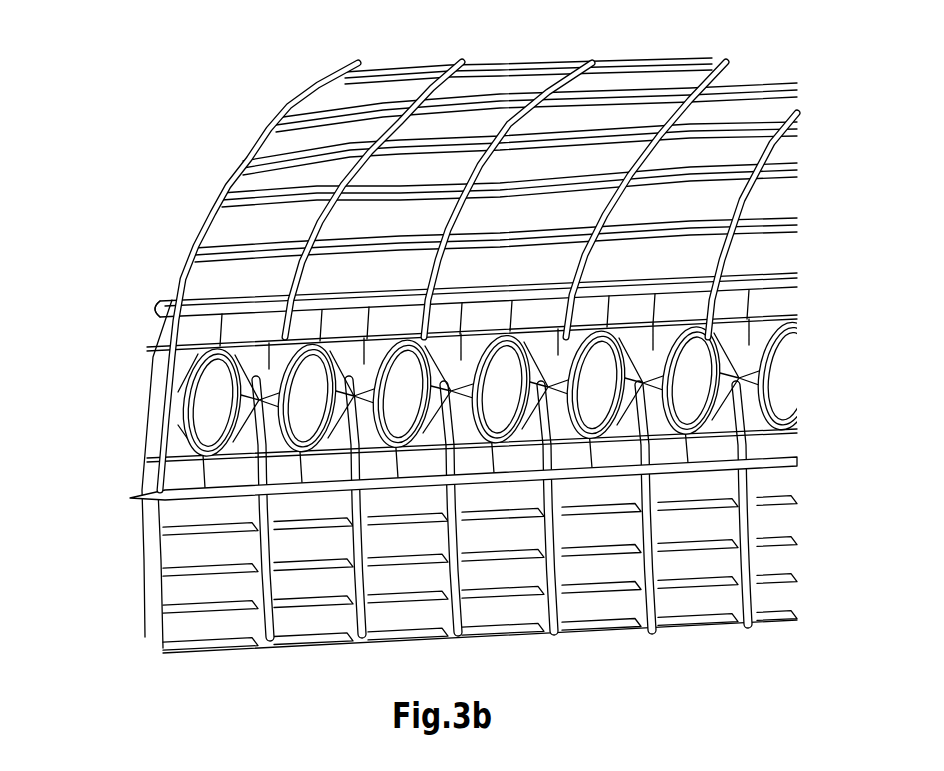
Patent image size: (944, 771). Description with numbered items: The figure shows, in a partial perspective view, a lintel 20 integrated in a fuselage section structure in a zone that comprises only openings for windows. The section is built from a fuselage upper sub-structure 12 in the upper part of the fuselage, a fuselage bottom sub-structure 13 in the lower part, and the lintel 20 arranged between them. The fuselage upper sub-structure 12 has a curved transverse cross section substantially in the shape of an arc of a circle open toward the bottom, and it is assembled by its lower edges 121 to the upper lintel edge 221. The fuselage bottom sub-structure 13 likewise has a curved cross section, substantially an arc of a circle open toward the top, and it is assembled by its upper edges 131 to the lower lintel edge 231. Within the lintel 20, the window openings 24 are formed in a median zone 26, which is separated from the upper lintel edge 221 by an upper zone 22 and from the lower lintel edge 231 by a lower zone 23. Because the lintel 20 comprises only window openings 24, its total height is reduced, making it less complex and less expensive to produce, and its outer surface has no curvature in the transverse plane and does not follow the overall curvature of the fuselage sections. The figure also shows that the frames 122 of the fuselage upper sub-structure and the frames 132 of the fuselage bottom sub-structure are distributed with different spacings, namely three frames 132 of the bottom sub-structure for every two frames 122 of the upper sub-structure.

The fuselage upper sub-structure 12 is at (447, 246).
The lower edges of the fuselage upper sub-structure 121 is at (173, 294).
The frames of the fuselage upper sub-structure 122 is at (677, 100).
The fuselage bottom sub-structure 13 is at (413, 502).
The upper edges of the fuselage bottom sub-structure 131 is at (140, 502).
The frames of the fuselage bottom sub-structure 132 is at (543, 608).
The lintel 20 is at (442, 386).
The upper zone 22 is at (455, 309).
The upper lintel edge 221 is at (160, 310).
The lower zone 23 is at (442, 452).
The lower lintel edge 231 is at (130, 498).
The window openings 24 is at (520, 403).
The median zone 26 is at (501, 387).